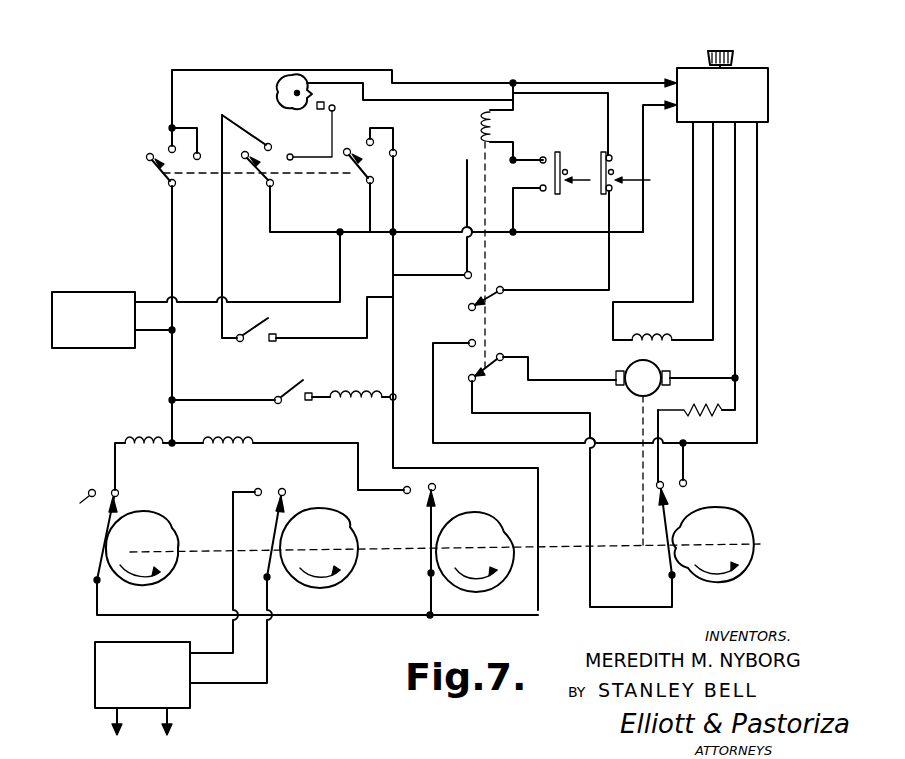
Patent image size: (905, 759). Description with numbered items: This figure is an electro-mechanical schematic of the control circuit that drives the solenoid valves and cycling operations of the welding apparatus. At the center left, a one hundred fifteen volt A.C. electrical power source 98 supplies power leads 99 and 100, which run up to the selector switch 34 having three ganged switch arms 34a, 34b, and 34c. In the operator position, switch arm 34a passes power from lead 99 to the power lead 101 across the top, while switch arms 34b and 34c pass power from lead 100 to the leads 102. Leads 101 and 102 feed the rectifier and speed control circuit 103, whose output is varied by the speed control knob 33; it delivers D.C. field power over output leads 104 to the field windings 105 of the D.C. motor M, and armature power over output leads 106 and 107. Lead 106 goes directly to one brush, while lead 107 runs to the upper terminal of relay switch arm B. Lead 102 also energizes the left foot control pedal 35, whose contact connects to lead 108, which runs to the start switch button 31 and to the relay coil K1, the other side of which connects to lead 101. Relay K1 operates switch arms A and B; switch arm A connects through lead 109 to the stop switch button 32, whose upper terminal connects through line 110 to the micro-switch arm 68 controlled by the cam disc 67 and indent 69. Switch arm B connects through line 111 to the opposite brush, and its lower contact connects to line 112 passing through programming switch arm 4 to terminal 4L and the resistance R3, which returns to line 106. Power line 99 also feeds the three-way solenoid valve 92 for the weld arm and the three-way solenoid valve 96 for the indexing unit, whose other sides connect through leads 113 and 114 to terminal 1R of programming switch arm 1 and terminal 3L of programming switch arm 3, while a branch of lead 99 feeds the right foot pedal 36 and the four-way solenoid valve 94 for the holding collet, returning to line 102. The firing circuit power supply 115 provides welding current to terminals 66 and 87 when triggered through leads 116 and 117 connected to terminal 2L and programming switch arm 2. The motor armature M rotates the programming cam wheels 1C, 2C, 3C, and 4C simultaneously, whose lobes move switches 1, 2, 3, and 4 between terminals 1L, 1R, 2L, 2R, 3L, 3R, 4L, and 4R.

The power lead 101 is at (237, 69).
The indent 69 is at (282, 78).
The cam disc 67 is at (302, 88).
The micro-switch arm 68 is at (324, 103).
The line 110 is at (439, 98).
The relay coil K1 is at (495, 134).
The start switch button 31 is at (558, 196).
The stop switch button 32 is at (613, 178).
The speed control knob 33 is at (735, 53).
The rectifier and speed control circuit 103 is at (769, 93).
The leads 102 is at (395, 206).
The switch arm 34a is at (163, 181).
The switch arm 34b is at (262, 182).
The switch arm 34c is at (355, 178).
The selector switch 34 is at (286, 271).
The electrical power source 98 is at (96, 290).
The power lead 99 is at (176, 285).
The power lead 100 is at (342, 265).
The lead 108 is at (396, 298).
The left foot control pedal 35 is at (236, 334).
The right foot pedal 36 is at (276, 387).
The four-way solenoid valve 94 is at (341, 392).
The three-way solenoid valve 92 is at (146, 440).
The three-way solenoid valve 96 is at (221, 440).
The lead 114 is at (357, 455).
The lead 113 is at (115, 472).
The terminal 1L is at (78, 504).
The right hand terminal 1R is at (120, 496).
The programming switch arm 1 is at (112, 527).
The programming cam wheel 1C is at (433, 548).
The left-hand terminal 2L is at (256, 496).
The terminal 2R is at (286, 492).
The programming switch arm 2 is at (264, 538).
The programming cam wheel 2C is at (319, 548).
The left hand terminal 3L is at (406, 494).
The terminal 3R is at (436, 488).
The programming switch arm 3 is at (429, 528).
The programming cam wheel 3C is at (475, 552).
The left terminal 4L is at (656, 489).
The terminal 4R is at (687, 484).
The programming switch arm 4 is at (659, 528).
The programming cam wheel 4C is at (713, 544).
The lead 116 is at (231, 560).
The lead 117 is at (276, 645).
The firing circuit power supply 115 is at (96, 682).
The terminal 87 is at (117, 733).
The terminal 66 is at (167, 733).
The switch arm A is at (448, 246).
The lead 109 is at (557, 292).
The switch arm B is at (571, 474).
The line 111 is at (553, 380).
The output lead 107 is at (536, 448).
The output leads 104 is at (705, 257).
The field windings 105 is at (634, 338).
The D.C. motor M is at (635, 446).
The output lead 106 is at (758, 264).
The resistance R3 is at (690, 413).
The line 112 is at (593, 558).